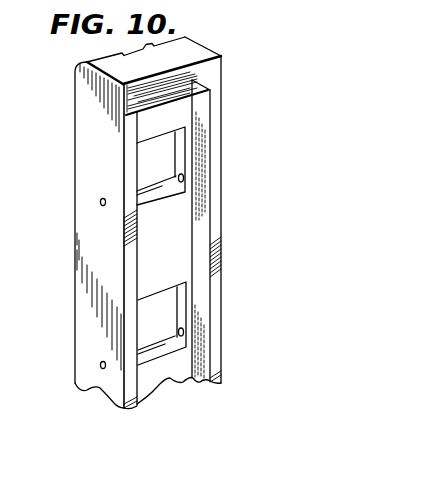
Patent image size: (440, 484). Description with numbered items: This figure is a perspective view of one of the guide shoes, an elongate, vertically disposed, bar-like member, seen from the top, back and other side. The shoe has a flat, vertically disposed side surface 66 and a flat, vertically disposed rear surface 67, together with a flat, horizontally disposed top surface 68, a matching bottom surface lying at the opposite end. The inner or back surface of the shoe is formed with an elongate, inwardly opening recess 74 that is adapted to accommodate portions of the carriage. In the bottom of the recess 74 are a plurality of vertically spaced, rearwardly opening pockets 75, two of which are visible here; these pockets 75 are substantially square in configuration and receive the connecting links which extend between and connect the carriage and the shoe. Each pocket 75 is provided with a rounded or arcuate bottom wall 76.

The side surface 66 is at (93, 133).
The rear surface 67 is at (212, 72).
The top surface 68 is at (183, 47).
The recess 74 is at (178, 230).
The pocket 75 is at (150, 160).
The arcuate bottom wall 76 is at (161, 188).